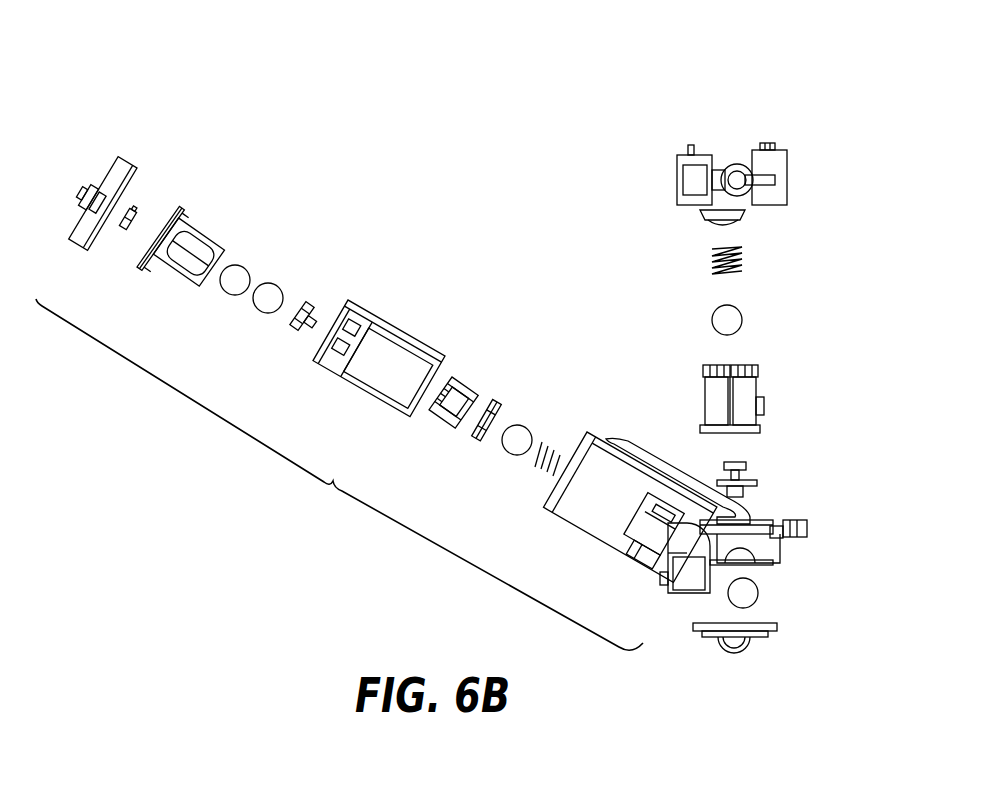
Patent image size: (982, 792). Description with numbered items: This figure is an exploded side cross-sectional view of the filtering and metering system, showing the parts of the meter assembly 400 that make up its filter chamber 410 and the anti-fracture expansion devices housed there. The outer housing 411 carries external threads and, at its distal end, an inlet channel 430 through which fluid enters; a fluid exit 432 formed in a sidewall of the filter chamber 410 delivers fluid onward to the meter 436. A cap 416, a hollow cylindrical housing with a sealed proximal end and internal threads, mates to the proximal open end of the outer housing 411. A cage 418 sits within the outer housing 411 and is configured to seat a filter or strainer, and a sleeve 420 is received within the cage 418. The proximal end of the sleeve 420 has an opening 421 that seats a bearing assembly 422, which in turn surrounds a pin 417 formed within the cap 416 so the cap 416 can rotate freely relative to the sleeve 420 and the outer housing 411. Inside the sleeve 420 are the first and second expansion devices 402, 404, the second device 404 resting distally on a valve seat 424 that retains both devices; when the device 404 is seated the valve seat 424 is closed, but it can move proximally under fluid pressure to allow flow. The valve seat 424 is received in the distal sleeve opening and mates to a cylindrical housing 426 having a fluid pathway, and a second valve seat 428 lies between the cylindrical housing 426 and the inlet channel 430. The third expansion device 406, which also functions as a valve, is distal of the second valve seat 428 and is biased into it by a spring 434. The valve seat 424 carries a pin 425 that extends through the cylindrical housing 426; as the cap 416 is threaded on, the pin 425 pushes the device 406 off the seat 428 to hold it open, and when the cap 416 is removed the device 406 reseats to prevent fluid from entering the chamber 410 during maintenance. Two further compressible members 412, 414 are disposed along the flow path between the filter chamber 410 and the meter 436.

The meter assembly 400 is at (366, 125).
The first anti-fracture expansion device 402 is at (236, 265).
The second anti-fracture expansion device 404 is at (279, 283).
The third anti-fracture expansion device 406 is at (530, 432).
The filter chamber 410 is at (339, 474).
The outer housing 411 is at (600, 441).
The fourth compressible member 412 is at (760, 590).
The fifth compressible member 414 is at (742, 320).
The cap 416 is at (113, 165).
The pin 417 is at (117, 207).
The cage 418 is at (411, 328).
The sleeve 420 is at (197, 229).
The opening 421 is at (151, 229).
The bearing assembly 422 is at (123, 230).
The valve seat 424 is at (300, 304).
The pin 425 is at (312, 313).
The cylindrical housing 426 is at (462, 378).
The second valve seat 428 is at (493, 407).
The inlet channel 430 is at (637, 548).
The fluid exit 432 is at (681, 482).
The spring 434 is at (536, 466).
The meter 436 is at (675, 175).